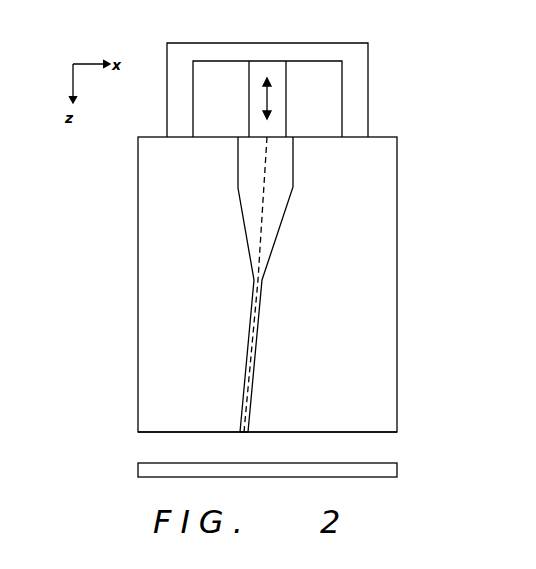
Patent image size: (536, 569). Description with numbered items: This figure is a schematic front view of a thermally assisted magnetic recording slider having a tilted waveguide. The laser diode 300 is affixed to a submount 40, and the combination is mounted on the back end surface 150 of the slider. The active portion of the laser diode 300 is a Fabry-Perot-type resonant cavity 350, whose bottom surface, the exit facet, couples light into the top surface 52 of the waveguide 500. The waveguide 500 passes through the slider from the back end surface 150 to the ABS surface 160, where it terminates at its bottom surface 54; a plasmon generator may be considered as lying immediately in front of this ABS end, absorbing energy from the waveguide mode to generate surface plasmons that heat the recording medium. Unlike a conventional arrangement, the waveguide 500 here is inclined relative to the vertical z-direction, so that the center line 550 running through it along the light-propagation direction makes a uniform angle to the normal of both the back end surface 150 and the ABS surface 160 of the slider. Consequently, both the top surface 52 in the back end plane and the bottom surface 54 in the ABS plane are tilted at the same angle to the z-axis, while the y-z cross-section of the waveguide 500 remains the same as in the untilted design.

The submount 40 is at (353, 103).
The laser diode 300 is at (327, 77).
The Fabry-Perot-type resonant cavity 350 is at (273, 68).
The top surface of the waveguide 52 is at (292, 133).
The back end surface of the slider 150 is at (180, 138).
The waveguide 500 is at (273, 220).
The center line of the waveguide 550 is at (268, 162).
The ABS surface of the slider 160 is at (183, 430).
The bottom surface of the waveguide 54 is at (247, 430).